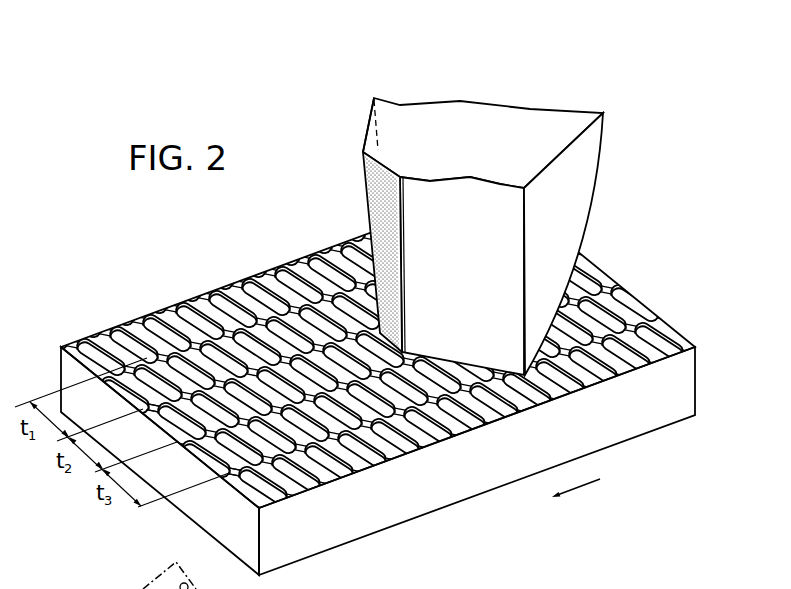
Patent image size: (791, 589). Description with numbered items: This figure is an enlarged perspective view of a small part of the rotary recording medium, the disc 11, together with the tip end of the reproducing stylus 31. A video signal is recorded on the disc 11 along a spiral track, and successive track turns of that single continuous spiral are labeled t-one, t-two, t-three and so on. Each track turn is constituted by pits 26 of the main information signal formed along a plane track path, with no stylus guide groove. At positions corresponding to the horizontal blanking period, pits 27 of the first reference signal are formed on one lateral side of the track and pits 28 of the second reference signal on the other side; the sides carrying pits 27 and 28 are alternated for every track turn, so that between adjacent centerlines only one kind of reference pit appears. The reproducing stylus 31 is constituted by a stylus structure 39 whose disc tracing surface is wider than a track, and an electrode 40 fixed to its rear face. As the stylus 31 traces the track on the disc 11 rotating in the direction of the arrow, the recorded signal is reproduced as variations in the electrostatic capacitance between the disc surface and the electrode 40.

The disc 11 is at (139, 312).
The pits of the main information signal 26 is at (218, 297).
The pits of the first reference signal 27 is at (278, 292).
The pits of the second reference signal 28 is at (147, 407).
The reproducing stylus 31 is at (356, 139).
The stylus structure 39 is at (476, 236).
The electrode 40 is at (368, 184).